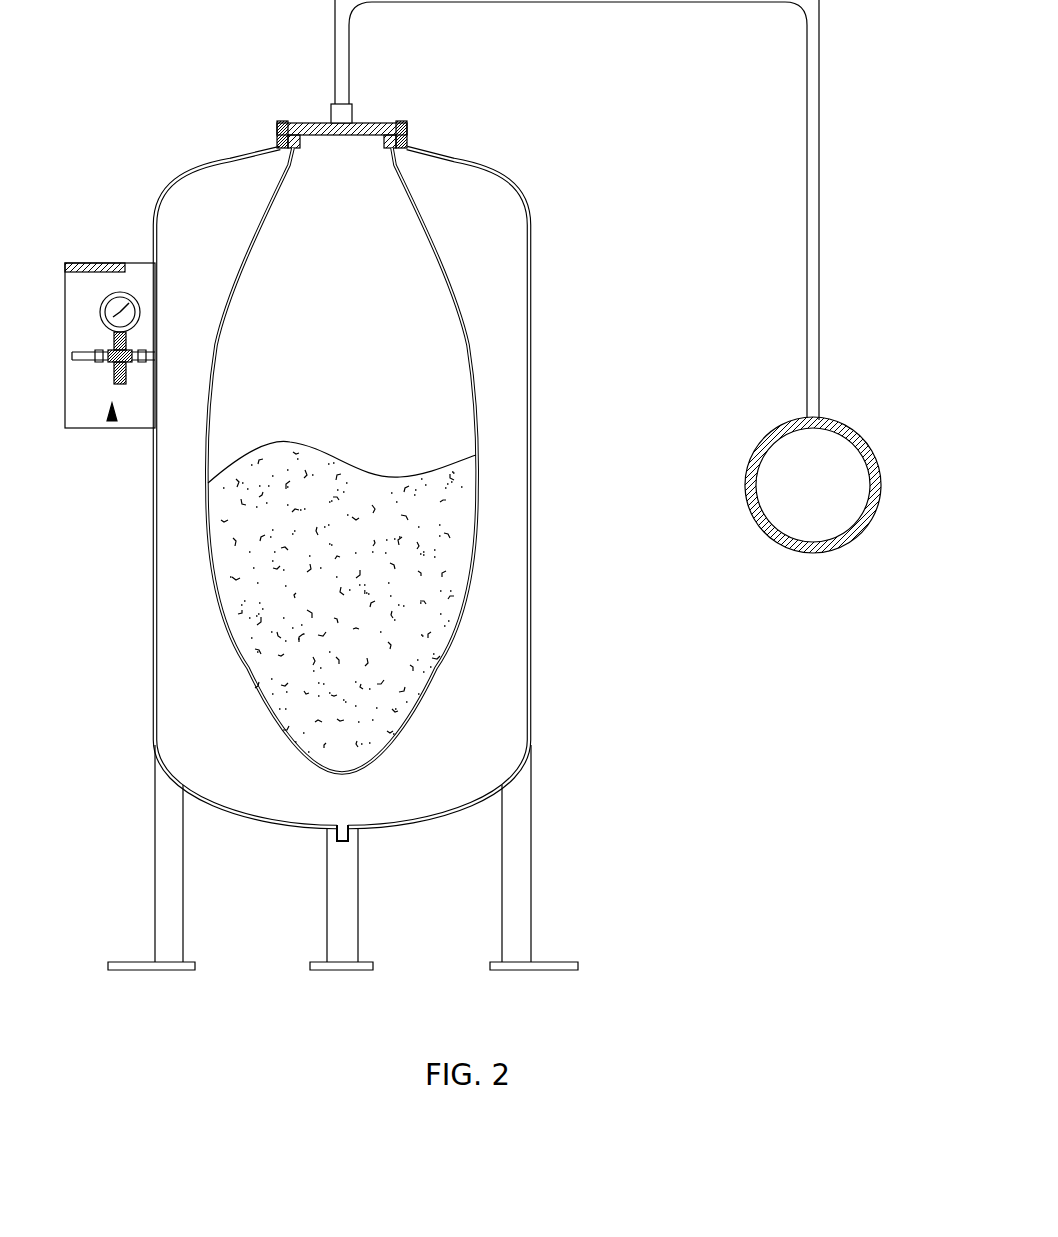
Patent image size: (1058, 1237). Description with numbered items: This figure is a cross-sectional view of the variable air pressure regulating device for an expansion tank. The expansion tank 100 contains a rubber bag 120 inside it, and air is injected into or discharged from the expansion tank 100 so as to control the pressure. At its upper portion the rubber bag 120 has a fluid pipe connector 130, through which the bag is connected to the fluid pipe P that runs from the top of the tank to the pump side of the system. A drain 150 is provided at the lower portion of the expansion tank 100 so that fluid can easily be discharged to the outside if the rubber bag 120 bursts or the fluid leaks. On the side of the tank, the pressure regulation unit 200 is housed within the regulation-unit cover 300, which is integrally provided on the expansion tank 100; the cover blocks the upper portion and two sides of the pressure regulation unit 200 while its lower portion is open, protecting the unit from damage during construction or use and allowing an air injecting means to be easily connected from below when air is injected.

The expansion tank 100 is at (532, 258).
The rubber bag 120 is at (478, 386).
The fluid pipe connector 130 is at (352, 105).
The drain 150 is at (349, 831).
The pressure regulation unit 200 is at (113, 428).
The regulation-unit cover 300 is at (90, 262).
The fluid pipe P is at (785, 546).